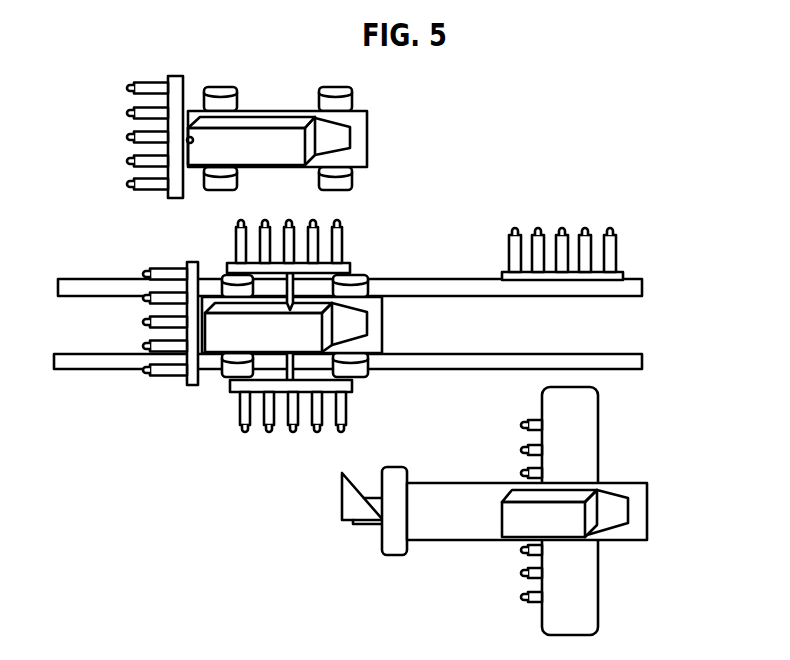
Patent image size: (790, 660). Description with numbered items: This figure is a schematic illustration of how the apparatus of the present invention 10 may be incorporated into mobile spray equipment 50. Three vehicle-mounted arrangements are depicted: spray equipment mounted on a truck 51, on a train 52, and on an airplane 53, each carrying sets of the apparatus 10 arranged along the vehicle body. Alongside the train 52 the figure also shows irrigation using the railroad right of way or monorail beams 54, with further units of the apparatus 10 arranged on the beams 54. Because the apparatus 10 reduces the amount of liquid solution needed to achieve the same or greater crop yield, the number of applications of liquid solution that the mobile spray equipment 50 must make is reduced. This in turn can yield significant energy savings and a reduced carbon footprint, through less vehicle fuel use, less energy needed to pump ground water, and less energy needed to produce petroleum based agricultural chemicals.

The apparatus of the present invention 10 is at (130, 113).
The mobile spray equipment 50 is at (356, 228).
The truck 51 is at (367, 147).
The train 52 is at (382, 335).
The airplane 53 is at (648, 518).
The railroad right of way or monorail beams 54 is at (622, 268).